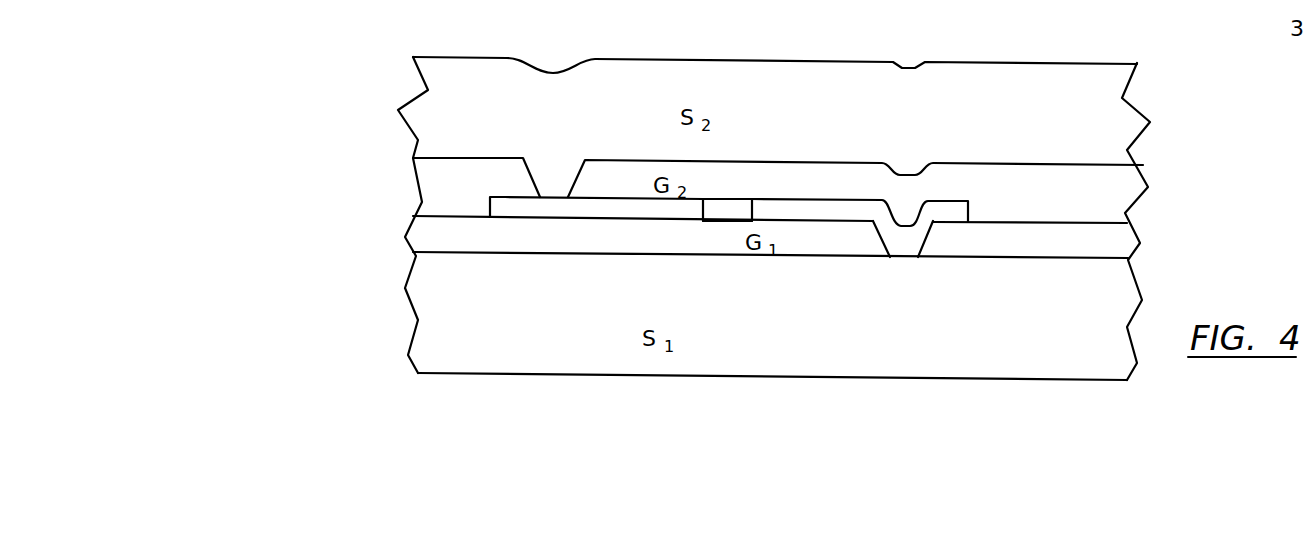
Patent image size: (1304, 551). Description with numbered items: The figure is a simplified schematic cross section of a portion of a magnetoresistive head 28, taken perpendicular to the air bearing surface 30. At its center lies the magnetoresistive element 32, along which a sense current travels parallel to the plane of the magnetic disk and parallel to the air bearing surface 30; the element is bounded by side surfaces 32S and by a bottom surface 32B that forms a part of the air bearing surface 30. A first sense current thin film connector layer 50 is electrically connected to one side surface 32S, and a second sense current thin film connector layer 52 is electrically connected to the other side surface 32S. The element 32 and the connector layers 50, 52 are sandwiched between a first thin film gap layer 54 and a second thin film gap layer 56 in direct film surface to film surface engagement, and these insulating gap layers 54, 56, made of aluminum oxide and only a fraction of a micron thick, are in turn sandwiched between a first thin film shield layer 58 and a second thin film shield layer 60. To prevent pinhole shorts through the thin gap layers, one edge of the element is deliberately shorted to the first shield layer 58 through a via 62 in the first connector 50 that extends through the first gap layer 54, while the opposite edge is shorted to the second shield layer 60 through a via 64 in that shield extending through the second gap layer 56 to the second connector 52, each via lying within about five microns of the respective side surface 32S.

The magnetoresistive head 28 is at (373, 136).
The air bearing surface 30 is at (1022, 4).
The magnetoresistive element 32 is at (730, 197).
The side surfaces 32S is at (703, 216).
The bottom surface 32B is at (727, 212).
The first sense current thin film connector layer 50 is at (957, 212).
The second sense current thin film connector layer 52 is at (503, 205).
The first thin film gap layer 54 is at (1082, 245).
The second thin film gap layer 56 is at (795, 178).
The first thin film shield layer 58 is at (1002, 348).
The second thin film shield layer 60 is at (605, 80).
The via 62 is at (903, 247).
The via 64 is at (547, 183).